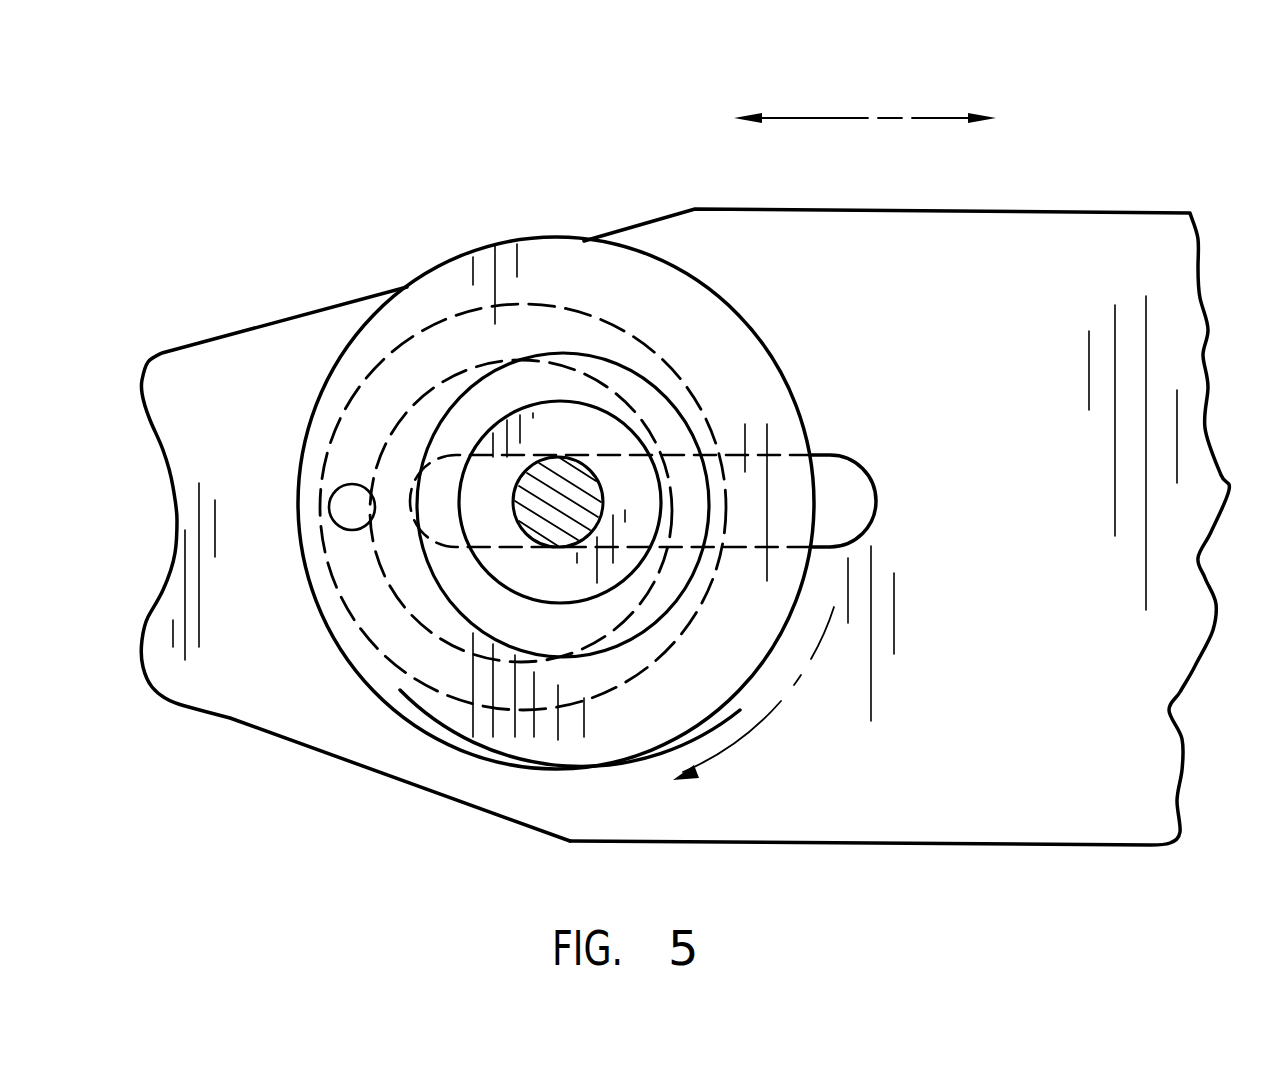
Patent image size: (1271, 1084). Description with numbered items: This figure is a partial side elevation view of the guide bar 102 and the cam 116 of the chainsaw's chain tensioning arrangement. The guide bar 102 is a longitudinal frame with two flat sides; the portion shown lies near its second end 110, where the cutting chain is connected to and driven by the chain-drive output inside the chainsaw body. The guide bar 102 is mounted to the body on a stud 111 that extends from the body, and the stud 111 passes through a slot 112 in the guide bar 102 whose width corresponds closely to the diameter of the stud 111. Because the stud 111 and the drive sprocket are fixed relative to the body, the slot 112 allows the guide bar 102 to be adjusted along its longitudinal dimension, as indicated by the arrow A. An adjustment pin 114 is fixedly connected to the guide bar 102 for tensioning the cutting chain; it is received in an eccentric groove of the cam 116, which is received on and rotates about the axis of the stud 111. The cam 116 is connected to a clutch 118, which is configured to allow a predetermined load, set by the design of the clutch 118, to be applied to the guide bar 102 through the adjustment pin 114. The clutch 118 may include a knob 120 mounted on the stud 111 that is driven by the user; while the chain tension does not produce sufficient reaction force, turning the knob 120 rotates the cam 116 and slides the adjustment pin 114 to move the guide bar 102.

The guide bar 102 is at (1030, 249).
The second end 110 is at (278, 352).
The stud 111 is at (563, 456).
The slot 112 is at (841, 455).
The adjustment pin 114 is at (352, 532).
The cam 116 is at (472, 630).
The clutch 118 is at (558, 266).
The knob 120 is at (595, 768).
The arrow A is at (841, 118).